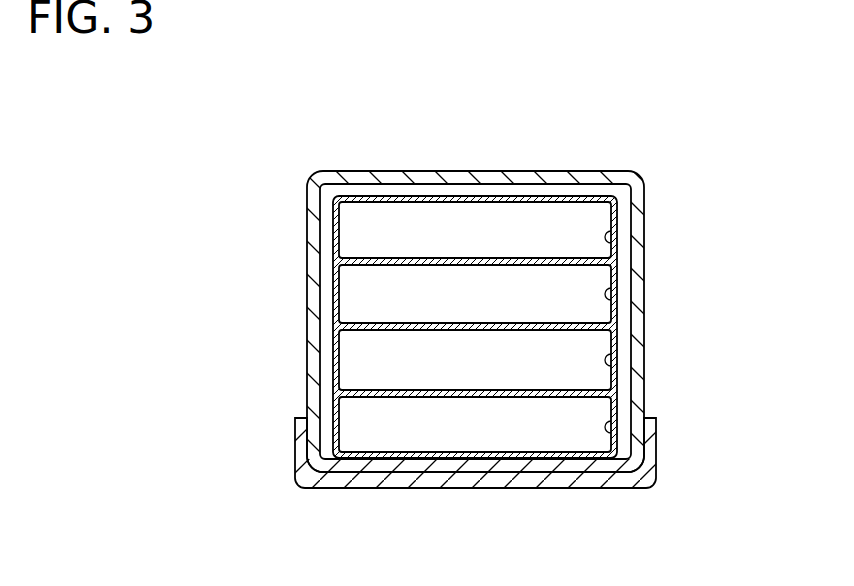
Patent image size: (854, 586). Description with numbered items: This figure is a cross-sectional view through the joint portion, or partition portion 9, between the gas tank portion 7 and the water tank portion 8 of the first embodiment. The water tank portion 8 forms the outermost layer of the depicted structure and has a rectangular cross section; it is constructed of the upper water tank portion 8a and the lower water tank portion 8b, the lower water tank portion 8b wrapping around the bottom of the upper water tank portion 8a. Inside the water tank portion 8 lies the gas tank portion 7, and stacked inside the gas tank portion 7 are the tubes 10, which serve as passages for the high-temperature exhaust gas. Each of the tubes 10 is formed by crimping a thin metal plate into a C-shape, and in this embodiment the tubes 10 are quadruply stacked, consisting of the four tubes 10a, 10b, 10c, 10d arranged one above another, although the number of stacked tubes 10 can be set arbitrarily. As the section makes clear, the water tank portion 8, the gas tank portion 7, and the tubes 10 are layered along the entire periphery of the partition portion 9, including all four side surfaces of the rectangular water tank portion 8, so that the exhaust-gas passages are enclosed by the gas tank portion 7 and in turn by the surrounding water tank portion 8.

The gas tank portion 7 is at (508, 186).
The water tank portion 8 is at (475, 312).
The upper water tank portion 8a is at (475, 288).
The lower water tank portion 8b is at (543, 483).
The joint portion (partition portion) 9 is at (534, 246).
The tubes 10 is at (608, 197).
The tube 10a is at (613, 247).
The tube 10b is at (613, 305).
The tube 10c is at (613, 370).
The tube 10d is at (613, 437).